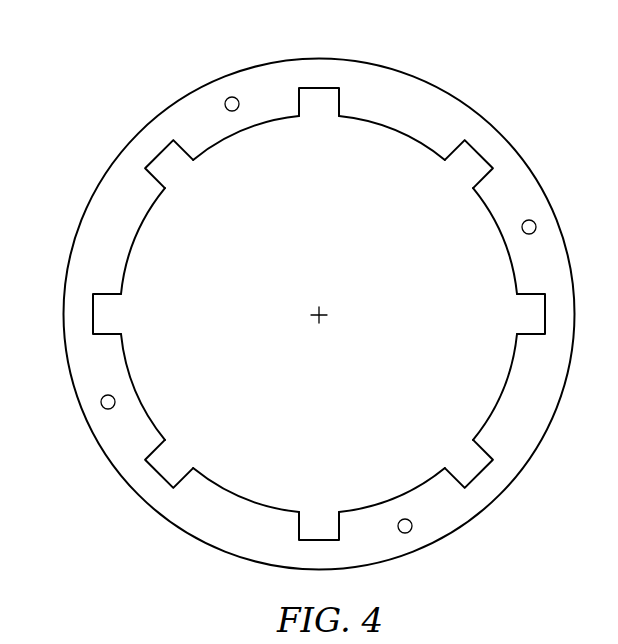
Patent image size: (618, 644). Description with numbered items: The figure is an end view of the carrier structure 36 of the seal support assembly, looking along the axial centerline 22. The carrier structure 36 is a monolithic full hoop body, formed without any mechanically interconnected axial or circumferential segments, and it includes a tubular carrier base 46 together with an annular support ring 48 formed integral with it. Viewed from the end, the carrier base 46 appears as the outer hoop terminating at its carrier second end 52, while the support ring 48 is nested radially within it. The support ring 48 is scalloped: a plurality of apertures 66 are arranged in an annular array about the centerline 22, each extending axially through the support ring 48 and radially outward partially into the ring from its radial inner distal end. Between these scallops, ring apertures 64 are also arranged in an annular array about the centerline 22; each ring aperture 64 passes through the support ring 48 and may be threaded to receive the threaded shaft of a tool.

The carrier structure 36 is at (318, 310).
The carrier base 46 is at (512, 142).
The carrier second end 52 is at (453, 107).
The support ring 48 is at (410, 138).
The apertures 66 is at (318, 102).
The ring apertures 64 is at (232, 97).
The axial centerline 22 is at (321, 317).